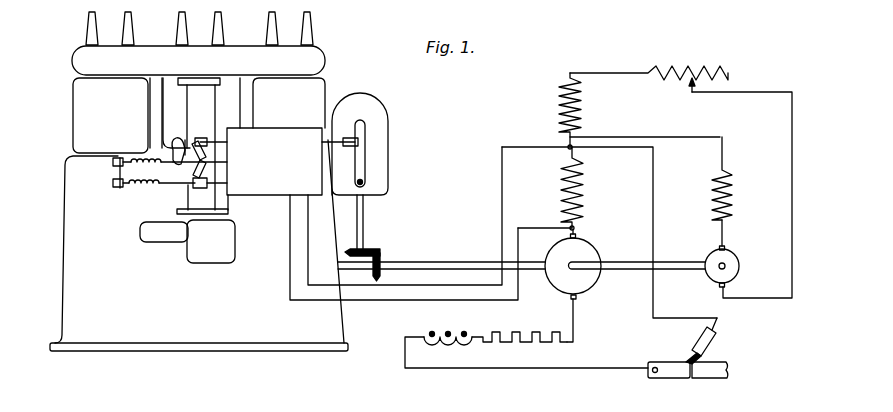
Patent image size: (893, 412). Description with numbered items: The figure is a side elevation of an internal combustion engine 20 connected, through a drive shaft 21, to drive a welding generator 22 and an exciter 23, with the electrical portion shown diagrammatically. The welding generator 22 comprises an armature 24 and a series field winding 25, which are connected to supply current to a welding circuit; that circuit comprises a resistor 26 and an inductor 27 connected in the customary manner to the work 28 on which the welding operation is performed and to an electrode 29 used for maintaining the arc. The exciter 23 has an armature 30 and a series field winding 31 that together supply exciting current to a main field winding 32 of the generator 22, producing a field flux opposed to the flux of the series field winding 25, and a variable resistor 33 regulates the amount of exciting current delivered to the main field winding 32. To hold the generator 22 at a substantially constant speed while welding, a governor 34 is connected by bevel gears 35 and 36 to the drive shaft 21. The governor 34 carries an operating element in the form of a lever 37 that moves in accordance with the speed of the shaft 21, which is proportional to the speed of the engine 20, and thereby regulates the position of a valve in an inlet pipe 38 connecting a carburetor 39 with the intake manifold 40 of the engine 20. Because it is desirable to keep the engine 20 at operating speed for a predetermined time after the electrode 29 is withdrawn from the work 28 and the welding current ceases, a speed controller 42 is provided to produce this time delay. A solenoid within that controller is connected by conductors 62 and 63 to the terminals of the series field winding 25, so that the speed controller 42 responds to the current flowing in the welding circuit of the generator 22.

The internal combustion engine 20 is at (358, 64).
The drive shaft 21 is at (423, 262).
The welding generator 22 is at (623, 245).
The exciter 23 is at (769, 253).
The armature 24 is at (552, 256).
The series field winding 25 is at (583, 198).
The resistor 26 is at (530, 333).
The inductor 27 is at (445, 333).
The work 28 is at (665, 362).
The electrode 29 is at (696, 353).
The armature 30 is at (708, 243).
The series field winding 31 is at (733, 203).
The main field winding 32 is at (581, 112).
The variable resistor 33 is at (688, 68).
The governor 34 is at (385, 112).
The bevel gear 35 is at (368, 250).
The bevel gear 36 is at (383, 259).
The lever 37 is at (366, 129).
The inlet pipe 38 is at (213, 122).
The carburetor 39 is at (233, 226).
The intake manifold 40 is at (235, 45).
The speed controller 42 is at (301, 117).
The conductor 62 is at (390, 300).
The conductor 63 is at (415, 285).